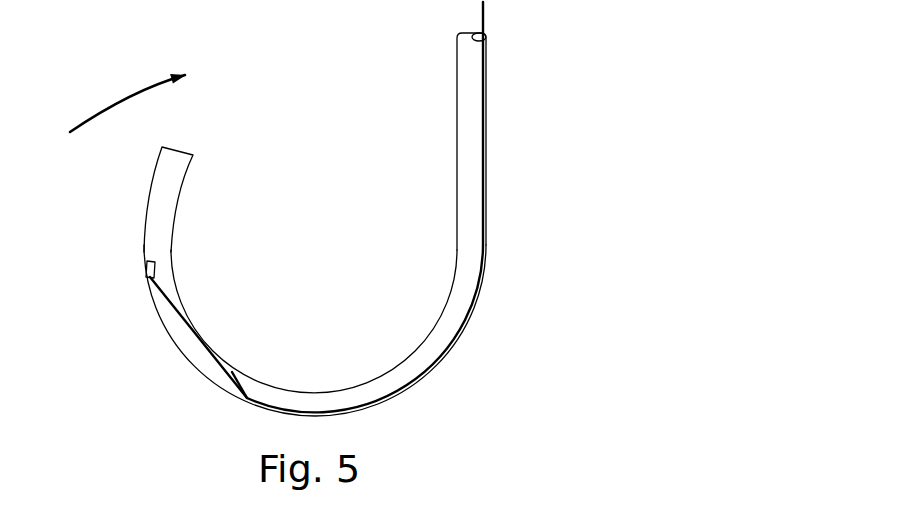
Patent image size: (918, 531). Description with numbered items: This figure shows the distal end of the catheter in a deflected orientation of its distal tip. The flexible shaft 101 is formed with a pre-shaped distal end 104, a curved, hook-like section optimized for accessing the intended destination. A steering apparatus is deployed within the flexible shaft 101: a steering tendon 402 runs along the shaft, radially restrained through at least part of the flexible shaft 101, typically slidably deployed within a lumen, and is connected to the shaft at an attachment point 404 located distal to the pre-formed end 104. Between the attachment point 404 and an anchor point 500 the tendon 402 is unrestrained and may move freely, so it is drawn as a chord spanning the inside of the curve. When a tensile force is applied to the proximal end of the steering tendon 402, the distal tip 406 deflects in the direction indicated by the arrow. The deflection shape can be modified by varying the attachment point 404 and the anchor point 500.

The flexible shaft 101 is at (601, 141).
The pre-shaped distal end 104 is at (397, 359).
The steering tendon 402 is at (274, 207).
The attachment point 404 is at (97, 289).
The distal tip 406 is at (221, 177).
The anchor point 500 is at (189, 413).